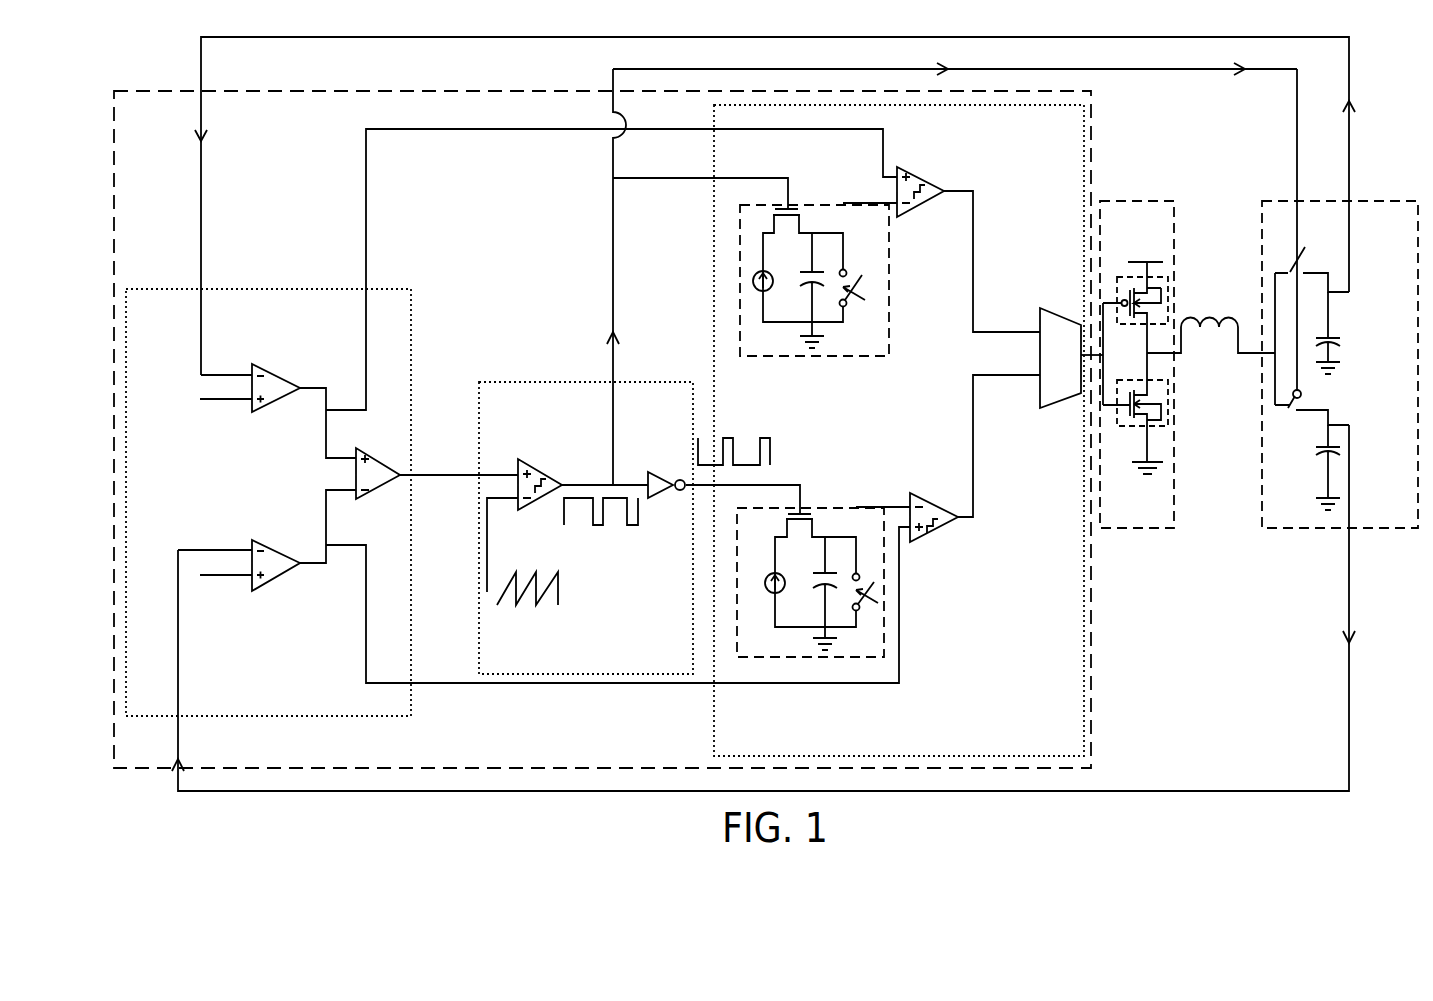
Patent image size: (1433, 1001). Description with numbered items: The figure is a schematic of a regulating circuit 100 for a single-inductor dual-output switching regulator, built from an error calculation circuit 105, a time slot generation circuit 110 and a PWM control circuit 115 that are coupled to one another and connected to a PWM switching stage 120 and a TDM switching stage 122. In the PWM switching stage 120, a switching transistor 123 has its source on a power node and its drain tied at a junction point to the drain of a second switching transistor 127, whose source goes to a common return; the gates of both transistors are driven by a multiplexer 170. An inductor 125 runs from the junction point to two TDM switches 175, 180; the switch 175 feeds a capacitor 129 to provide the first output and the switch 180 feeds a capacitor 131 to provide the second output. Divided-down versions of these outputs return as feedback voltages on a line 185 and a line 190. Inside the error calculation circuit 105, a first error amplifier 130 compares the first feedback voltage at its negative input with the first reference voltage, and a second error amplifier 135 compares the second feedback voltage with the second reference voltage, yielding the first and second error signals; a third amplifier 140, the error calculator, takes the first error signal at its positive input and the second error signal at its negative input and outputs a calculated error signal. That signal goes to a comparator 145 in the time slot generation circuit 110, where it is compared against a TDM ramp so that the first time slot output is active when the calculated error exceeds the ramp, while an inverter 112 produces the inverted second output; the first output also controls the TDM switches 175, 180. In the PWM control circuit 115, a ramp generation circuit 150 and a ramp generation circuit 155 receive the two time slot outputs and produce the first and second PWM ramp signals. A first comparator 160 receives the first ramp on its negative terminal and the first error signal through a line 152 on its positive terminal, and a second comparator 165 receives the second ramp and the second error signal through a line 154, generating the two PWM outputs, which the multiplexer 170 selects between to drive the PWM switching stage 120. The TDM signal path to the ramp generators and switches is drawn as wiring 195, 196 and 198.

The regulating circuit 100 is at (470, 760).
The error calculation circuit 105 is at (340, 716).
The time slot generation circuit 110 is at (480, 641).
The inverter 112 is at (686, 458).
The PWM control circuit 115 is at (902, 756).
The PWM switching stage 120 is at (1165, 528).
The TDM switching stage 122 is at (1282, 528).
The switching transistor 123 is at (1168, 296).
The inductor 125 is at (1190, 330).
The switching transistor 127 is at (1168, 420).
The capacitor 129 is at (1340, 342).
The first error amplifier 130 is at (262, 408).
The capacitor 131 is at (1316, 455).
The second error amplifier 135 is at (282, 575).
The third amplifier 140 is at (392, 434).
The comparator 145 is at (536, 472).
The ramp generation circuit 150 is at (889, 310).
The line 152 is at (366, 162).
The line 154 is at (366, 600).
The ramp generation circuit 155 is at (740, 612).
The first comparator 160 is at (912, 210).
The second comparator 165 is at (924, 538).
The multiplexer 170 is at (1040, 370).
The TDM switch 175 is at (1306, 262).
The TDM switch 180 is at (1302, 392).
The line 185 is at (201, 183).
The line 190 is at (178, 740).
The TDM1 signal line 195 is at (636, 178).
The TDM2 signal line 196 is at (770, 483).
The TDM select line 198 is at (1094, 69).